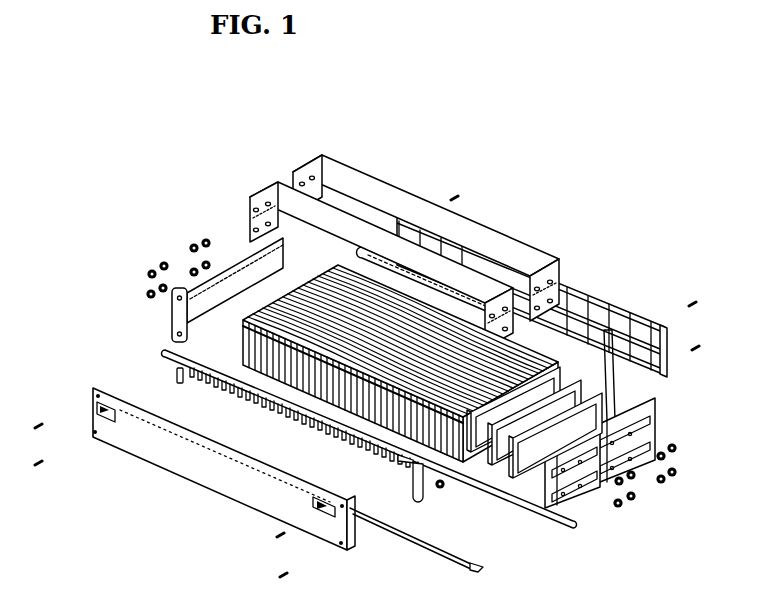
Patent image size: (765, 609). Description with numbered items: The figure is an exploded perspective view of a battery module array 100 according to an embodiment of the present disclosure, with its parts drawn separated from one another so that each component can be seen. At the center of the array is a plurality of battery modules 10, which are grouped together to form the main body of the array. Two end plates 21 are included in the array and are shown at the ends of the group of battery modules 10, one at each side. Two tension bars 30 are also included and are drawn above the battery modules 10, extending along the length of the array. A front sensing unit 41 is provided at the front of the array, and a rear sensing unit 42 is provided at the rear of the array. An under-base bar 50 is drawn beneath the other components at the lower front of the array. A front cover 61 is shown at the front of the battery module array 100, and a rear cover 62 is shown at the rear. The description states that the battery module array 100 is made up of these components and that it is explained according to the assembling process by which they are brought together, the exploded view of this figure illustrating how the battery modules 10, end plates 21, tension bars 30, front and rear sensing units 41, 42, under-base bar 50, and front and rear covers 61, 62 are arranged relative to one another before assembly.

The battery module array 100 is at (163, 147).
The battery module 10 is at (326, 270).
The end plate 21 is at (172, 314).
The tension bar 30 is at (283, 181).
The front sensing unit 41 is at (167, 352).
The rear sensing unit 42 is at (614, 374).
The under-base bar 50 is at (471, 563).
The front cover 61 is at (96, 389).
The rear cover 62 is at (605, 298).